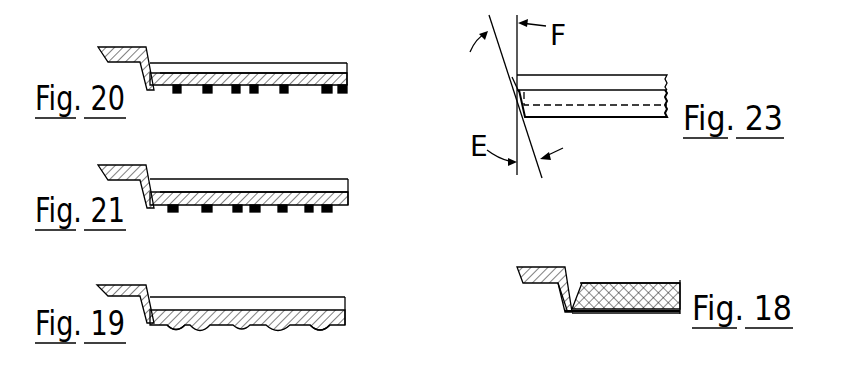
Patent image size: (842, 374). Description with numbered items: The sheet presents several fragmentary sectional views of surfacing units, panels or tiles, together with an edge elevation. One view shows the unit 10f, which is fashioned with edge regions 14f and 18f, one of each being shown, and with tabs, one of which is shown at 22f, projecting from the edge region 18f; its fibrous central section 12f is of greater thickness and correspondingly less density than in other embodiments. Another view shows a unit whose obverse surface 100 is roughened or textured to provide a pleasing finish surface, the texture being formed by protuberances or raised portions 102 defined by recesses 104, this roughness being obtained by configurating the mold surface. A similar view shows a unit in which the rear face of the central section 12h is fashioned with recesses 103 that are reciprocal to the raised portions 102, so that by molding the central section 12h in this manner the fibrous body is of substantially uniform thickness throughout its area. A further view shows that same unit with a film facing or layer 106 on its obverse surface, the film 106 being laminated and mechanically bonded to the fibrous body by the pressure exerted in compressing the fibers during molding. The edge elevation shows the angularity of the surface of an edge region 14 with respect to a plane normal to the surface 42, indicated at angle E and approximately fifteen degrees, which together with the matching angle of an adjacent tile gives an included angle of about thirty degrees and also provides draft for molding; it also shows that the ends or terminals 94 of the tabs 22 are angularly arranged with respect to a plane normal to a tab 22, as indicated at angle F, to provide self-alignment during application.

In FIG. 20, the central section 12h is at (341, 80).
In FIG. 20, the recesses 103 is at (237, 73).
In FIG. 20, the protuberances or raised portions 102 is at (209, 94).
In FIG. 19, the protuberances or raised portions 102 is at (268, 332).
In FIG. 21, the film facing or layer 106 is at (292, 214).
In FIG. 19, the obverse surface 100 is at (176, 337).
In FIG. 19, the recesses 104 is at (208, 332).
In FIG. 23, the tab 22 is at (582, 84).
In FIG. 23, the edge region 14 is at (522, 107).
In FIG. 23, the ends or terminals of the tabs 94 is at (515, 84).
In FIG. 23, the surface 42 is at (655, 118).
In FIG. 18, the tab 22f is at (520, 274).
In FIG. 18, the edge region 18f is at (562, 294).
In FIG. 18, the fibrous central section 12f is at (640, 292).
In FIG. 18, the edge region 14f is at (577, 292).
In FIG. 18, the unit 10f is at (634, 316).